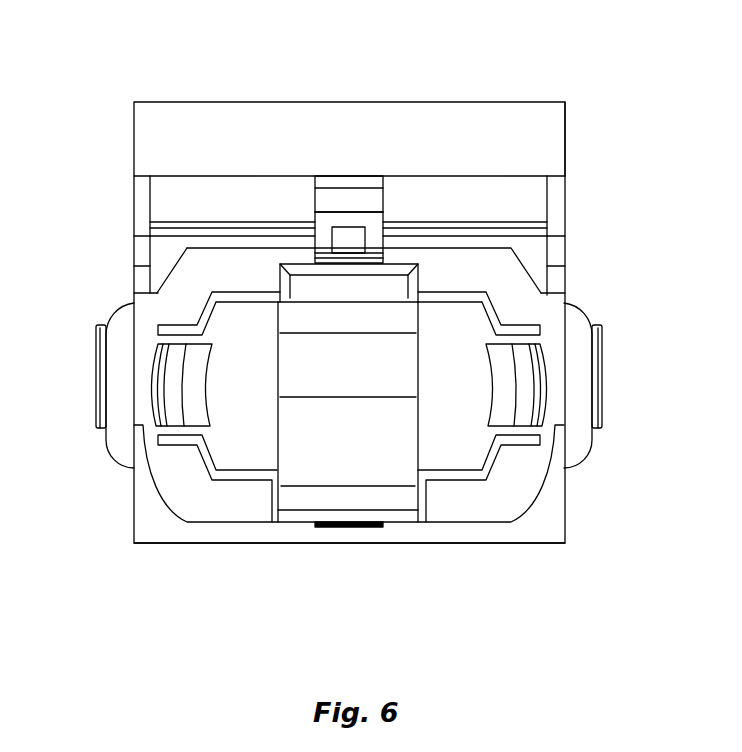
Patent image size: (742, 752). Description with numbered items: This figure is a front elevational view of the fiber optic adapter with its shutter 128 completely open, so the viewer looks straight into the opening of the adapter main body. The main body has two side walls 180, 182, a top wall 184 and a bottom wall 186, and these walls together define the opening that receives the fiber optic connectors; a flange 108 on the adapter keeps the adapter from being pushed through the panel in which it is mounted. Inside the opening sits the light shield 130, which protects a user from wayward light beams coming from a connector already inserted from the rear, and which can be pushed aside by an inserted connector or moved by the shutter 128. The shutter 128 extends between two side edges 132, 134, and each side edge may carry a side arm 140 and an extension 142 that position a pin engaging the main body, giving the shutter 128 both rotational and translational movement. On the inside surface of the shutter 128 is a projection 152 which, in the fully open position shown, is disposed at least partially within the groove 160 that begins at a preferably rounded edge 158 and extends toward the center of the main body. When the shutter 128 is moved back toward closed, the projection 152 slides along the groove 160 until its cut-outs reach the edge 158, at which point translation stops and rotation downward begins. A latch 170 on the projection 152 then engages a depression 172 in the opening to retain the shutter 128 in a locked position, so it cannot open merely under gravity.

The flange 108 is at (107, 440).
The shutter 128 is at (373, 102).
The light shield 130 is at (293, 498).
The side edge 132 is at (133, 133).
The side edge 134 is at (566, 131).
The side arm 140 is at (566, 238).
The extension 142 is at (566, 280).
The projection 152 is at (383, 215).
The edge 158 is at (322, 258).
The groove 160 is at (387, 242).
The latch 170 is at (378, 196).
The depression 172 is at (360, 528).
The side wall 180 is at (133, 500).
The side wall 182 is at (566, 507).
The top wall 184 is at (242, 236).
The bottom wall 186 is at (502, 544).